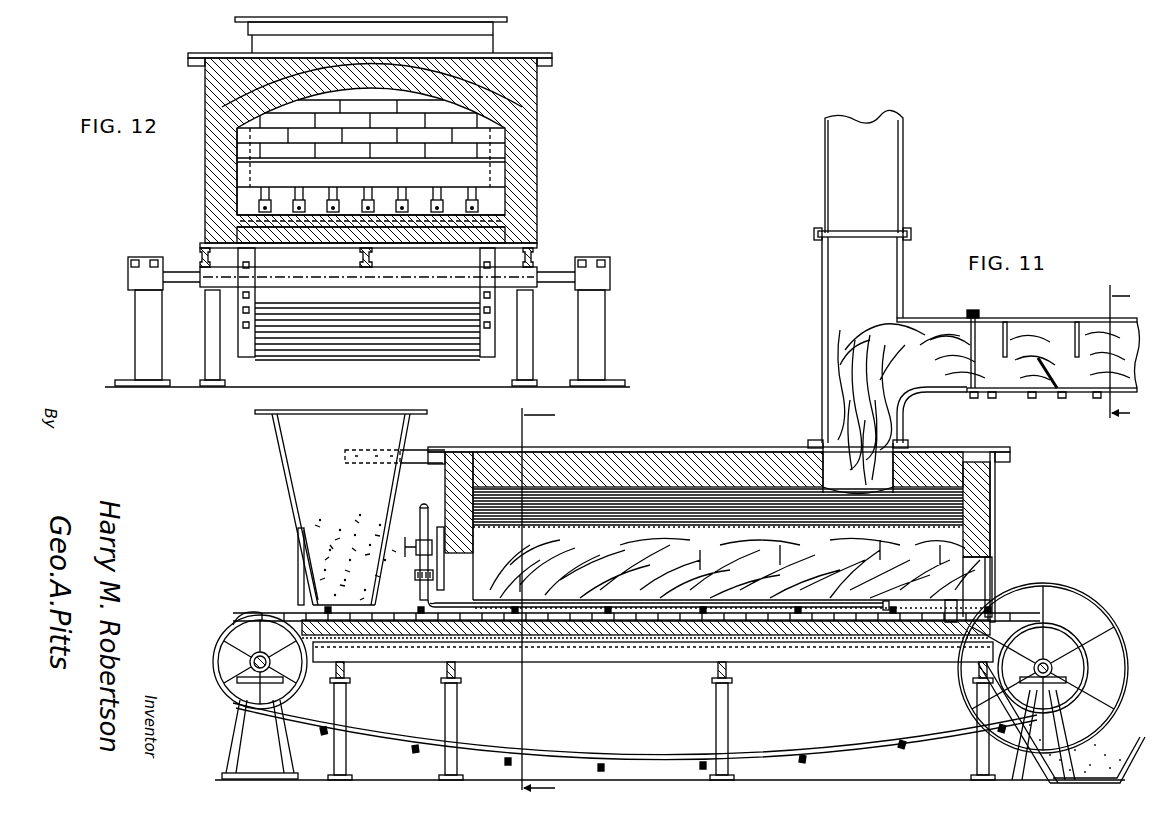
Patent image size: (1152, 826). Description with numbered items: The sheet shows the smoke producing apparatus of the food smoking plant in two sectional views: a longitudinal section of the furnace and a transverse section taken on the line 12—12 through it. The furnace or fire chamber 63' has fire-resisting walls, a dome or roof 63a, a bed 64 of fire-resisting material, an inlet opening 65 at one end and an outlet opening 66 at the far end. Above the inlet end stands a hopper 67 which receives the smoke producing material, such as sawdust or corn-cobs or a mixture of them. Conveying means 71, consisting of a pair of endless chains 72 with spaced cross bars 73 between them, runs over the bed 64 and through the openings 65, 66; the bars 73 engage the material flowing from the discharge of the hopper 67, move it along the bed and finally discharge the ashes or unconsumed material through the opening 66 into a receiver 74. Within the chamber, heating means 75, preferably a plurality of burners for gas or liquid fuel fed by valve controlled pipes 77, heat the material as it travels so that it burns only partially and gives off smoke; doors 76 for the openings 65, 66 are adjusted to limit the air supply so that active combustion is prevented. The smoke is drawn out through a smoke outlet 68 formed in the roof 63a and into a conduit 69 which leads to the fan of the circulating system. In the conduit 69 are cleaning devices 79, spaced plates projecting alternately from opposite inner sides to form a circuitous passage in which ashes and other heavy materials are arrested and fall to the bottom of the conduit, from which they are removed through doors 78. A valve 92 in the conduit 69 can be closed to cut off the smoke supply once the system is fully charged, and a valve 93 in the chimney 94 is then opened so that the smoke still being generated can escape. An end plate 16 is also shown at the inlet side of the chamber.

In FIG. 11, the section line 12 is at (551, 603).
In FIG. 11, the end plate 16 is at (444, 578).
In FIG. 12, the furnace or fire chamber 63' is at (379, 150).
In FIG. 11, the furnace or fire chamber 63' is at (719, 523).
In FIG. 12, the dome or roof 63a is at (393, 80).
In FIG. 11, the dome or roof 63a is at (748, 468).
In FIG. 11, the bed 64 is at (655, 640).
In FIG. 12, the inlet opening 65 is at (237, 202).
In FIG. 11, the inlet opening 65 is at (470, 568).
In FIG. 11, the outlet opening 66 is at (735, 568).
In FIG. 12, the hopper 67 is at (495, 46).
In FIG. 11, the hopper 67 is at (283, 482).
In FIG. 11, the smoke outlet 68 is at (828, 430).
In FIG. 11, the conduit 69 is at (1052, 320).
In FIG. 11, the conveying means 71 is at (249, 609).
In FIG. 12, the endless chains 72 is at (246, 358).
In FIG. 11, the endless chains 72 is at (580, 760).
In FIG. 12, the cross bars 73 is at (505, 221).
In FIG. 11, the cross bars 73 is at (800, 612).
In FIG. 11, the receiver 74 is at (1125, 752).
In FIG. 12, the heating means 75 is at (340, 200).
In FIG. 11, the heating means 75 is at (676, 590).
In FIG. 11, the doors 76 is at (977, 587).
In FIG. 11, the valved controlled pipes 77 is at (422, 516).
In FIG. 11, the doors 78 is at (1085, 398).
In FIG. 11, the cleaning devices 79 is at (1046, 372).
In FIG. 11, the valve 92 is at (973, 312).
In FIG. 11, the valve 93 is at (846, 233).
In FIG. 11, the chimney 94 is at (825, 210).